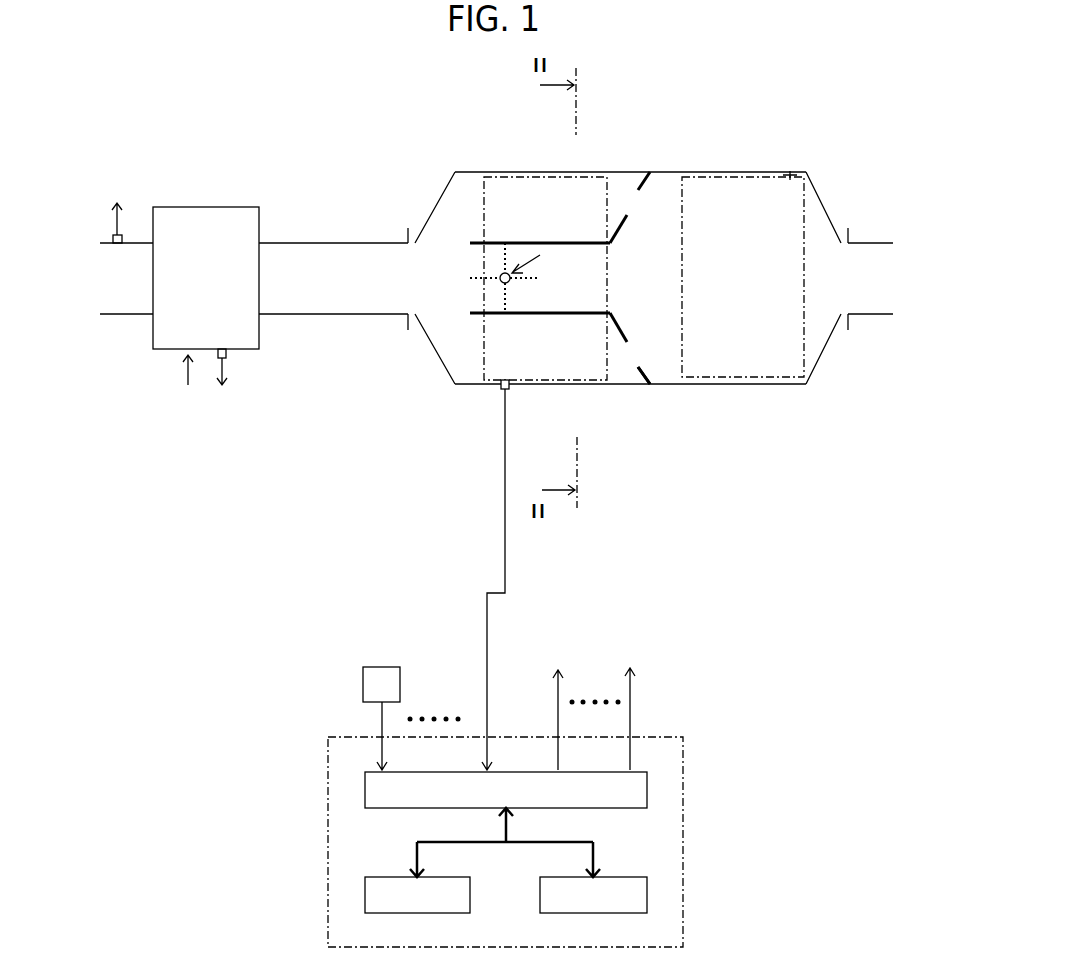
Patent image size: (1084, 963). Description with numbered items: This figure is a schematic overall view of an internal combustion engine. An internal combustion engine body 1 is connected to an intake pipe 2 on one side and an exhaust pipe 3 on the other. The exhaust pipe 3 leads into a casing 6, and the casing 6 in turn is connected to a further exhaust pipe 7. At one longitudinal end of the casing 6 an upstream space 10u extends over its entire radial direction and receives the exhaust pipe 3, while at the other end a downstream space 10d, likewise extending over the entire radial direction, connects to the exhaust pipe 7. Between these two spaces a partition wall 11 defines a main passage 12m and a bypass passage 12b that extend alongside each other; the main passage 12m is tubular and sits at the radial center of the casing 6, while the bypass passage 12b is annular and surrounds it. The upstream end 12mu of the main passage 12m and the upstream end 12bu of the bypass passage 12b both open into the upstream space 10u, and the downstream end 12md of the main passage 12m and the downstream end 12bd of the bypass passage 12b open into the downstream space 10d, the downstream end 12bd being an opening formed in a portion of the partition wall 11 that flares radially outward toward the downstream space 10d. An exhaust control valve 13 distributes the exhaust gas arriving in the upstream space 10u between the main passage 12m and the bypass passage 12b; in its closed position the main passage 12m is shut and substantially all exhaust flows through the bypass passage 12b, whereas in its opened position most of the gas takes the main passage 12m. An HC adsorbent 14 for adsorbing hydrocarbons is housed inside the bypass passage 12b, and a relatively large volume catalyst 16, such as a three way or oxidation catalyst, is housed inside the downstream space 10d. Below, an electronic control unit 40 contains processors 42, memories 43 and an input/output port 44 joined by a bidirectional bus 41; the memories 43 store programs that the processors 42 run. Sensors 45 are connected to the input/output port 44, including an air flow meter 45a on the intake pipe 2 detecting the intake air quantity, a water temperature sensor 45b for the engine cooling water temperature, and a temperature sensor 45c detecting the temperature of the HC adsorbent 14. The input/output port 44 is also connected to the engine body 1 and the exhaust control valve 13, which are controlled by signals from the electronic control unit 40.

The internal combustion engine body 1 is at (224, 207).
The intake pipe 2 is at (135, 314).
The exhaust pipe 3 is at (275, 314).
The casing 6 is at (717, 168).
The exhaust pipe 7 is at (878, 243).
The upstream space 10u is at (437, 225).
The downstream space 10d is at (663, 190).
The partition wall 11 is at (600, 312).
The main passage 12m is at (538, 192).
The upstream end of main passage 12mu is at (473, 262).
The downstream end of main passage 12md is at (612, 263).
The bypass passage 12b is at (565, 371).
The upstream end of bypass passage 12bu is at (470, 365).
The downstream end of bypass passage 12bd is at (637, 357).
The exhaust control valve 13 is at (525, 282).
The HC adsorbent 14 is at (598, 190).
The catalyst 16 is at (790, 166).
The electronic control unit 40 is at (545, 807).
The bidirectional bus 41 is at (595, 860).
The processor 42 is at (428, 910).
The memory 43 is at (604, 910).
The input/output port 44 is at (517, 806).
The sensors 45 is at (380, 667).
The air flow meter 45a is at (127, 232).
The water temperature sensor 45b is at (229, 355).
The temperature sensor 45c is at (500, 388).